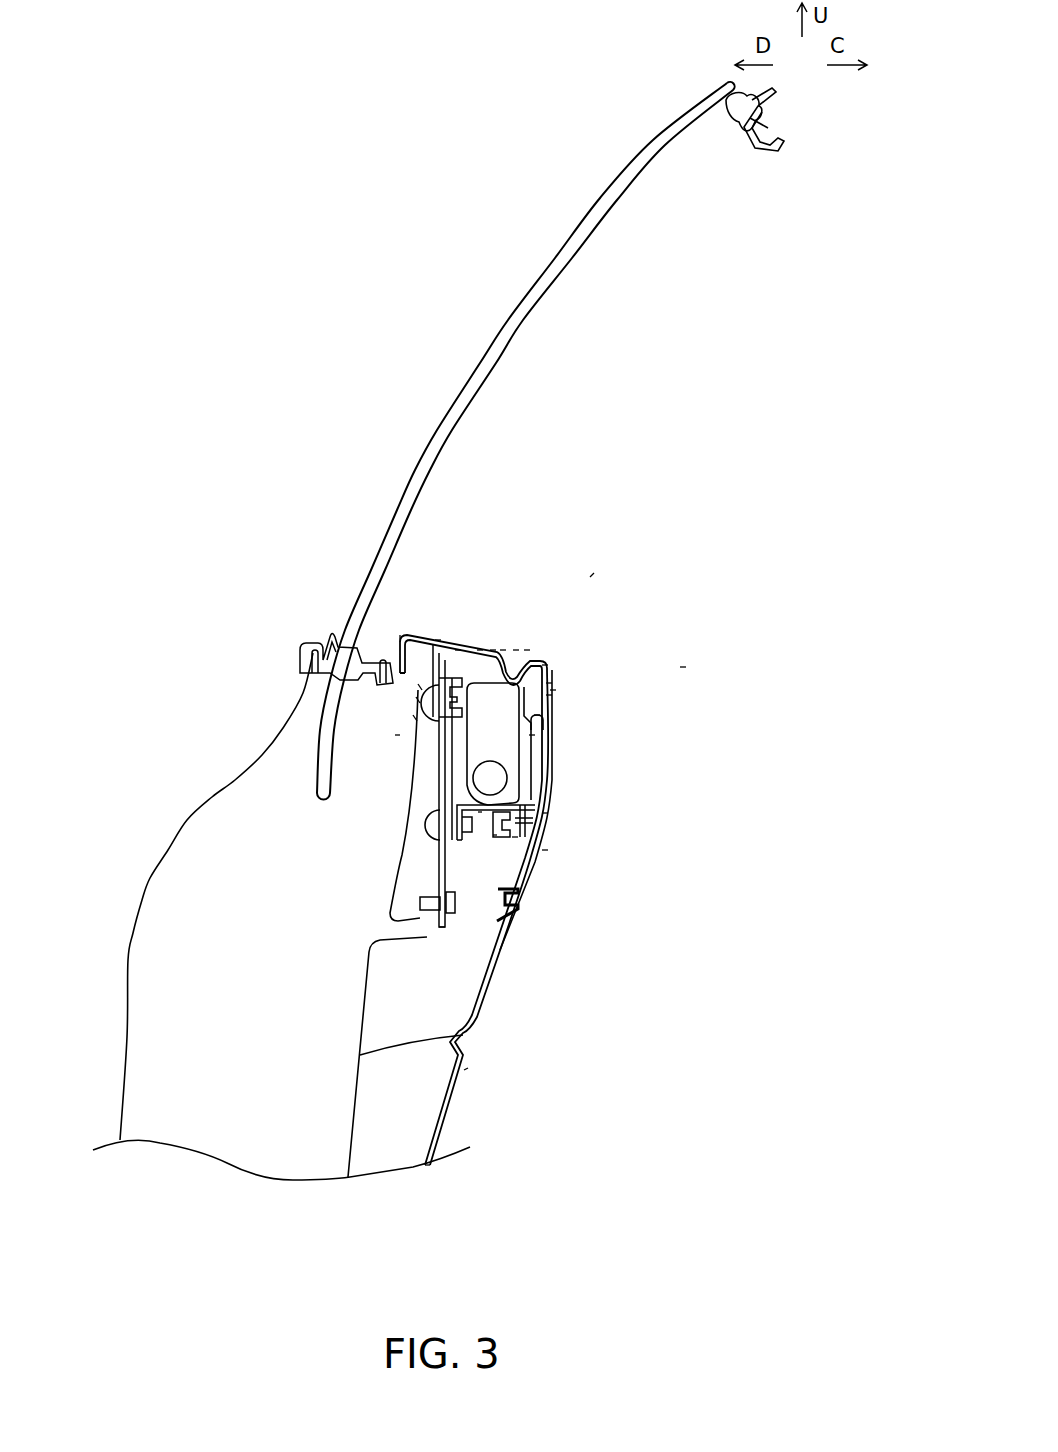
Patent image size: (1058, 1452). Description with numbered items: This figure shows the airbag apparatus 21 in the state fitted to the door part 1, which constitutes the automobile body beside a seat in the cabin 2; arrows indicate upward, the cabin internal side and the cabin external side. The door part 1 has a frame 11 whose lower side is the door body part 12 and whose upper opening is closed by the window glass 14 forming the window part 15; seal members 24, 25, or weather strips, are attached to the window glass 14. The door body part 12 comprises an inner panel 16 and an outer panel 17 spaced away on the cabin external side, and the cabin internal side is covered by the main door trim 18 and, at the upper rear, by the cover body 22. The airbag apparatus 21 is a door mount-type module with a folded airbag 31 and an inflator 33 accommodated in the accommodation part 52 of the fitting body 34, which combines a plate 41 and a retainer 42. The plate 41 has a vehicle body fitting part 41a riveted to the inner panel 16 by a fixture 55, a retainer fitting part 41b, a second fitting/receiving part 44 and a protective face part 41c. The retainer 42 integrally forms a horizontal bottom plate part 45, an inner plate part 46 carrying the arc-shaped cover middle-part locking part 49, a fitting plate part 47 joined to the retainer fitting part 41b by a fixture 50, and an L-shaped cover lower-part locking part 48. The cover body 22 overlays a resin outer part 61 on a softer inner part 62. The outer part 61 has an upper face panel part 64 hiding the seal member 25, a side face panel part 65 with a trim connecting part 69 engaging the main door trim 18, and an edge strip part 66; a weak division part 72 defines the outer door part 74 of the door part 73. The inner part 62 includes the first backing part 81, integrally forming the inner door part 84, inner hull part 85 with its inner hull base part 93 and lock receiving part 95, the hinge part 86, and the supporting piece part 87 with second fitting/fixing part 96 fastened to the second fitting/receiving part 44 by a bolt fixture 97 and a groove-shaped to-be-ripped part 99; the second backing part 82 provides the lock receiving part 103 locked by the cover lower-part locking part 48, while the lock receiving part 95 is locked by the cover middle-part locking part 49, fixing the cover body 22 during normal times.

The door part 1 is at (127, 1037).
The cabin 2 is at (683, 667).
The frame 11 is at (783, 150).
The door body part 12 is at (455, 1113).
The window glass 14 is at (540, 293).
The window part 15 is at (592, 247).
The inner panel 16 is at (473, 1035).
The outer panel 17 is at (133, 933).
The main door trim 18 is at (463, 1077).
The airbag apparatus 21 is at (601, 573).
The cover body 22 is at (552, 670).
The seal member 24 is at (730, 106).
The seal member 25 is at (333, 630).
The airbag 31 is at (545, 792).
The inflator 33 is at (545, 813).
The fitting body 34 is at (452, 932).
The plate 41 is at (445, 790).
The vehicle body fitting part 41a is at (420, 908).
The retainer fitting part 41b is at (457, 835).
The protective face part 41c is at (537, 715).
The retainer 42 is at (522, 747).
The second fitting/receiving part 44 is at (439, 717).
The bottom plate part 45 is at (480, 812).
The inner plate part 46 is at (490, 778).
The fitting plate part 47 is at (495, 835).
The cover lower-part locking part 48 is at (515, 837).
The cover middle-part locking part 49 is at (543, 720).
The fixture 50 is at (425, 825).
The accommodation part 52 is at (452, 778).
The fixture 55 is at (457, 903).
The outer part 61 is at (545, 665).
The inner part 62 is at (458, 655).
The upper face panel part 64 is at (503, 655).
The side face panel part 65 is at (553, 800).
The edge strip part 66 is at (400, 637).
The trim connecting part 69 is at (512, 920).
The division part 72 is at (527, 650).
The door part 73 is at (493, 655).
The outer door part 74 is at (480, 655).
The first backing part 81 is at (549, 683).
The second backing part 82 is at (533, 827).
The inner door part 84 is at (438, 645).
The inner hull part 85 is at (553, 690).
The hinge part 86 is at (516, 655).
The supporting piece part 87 is at (395, 735).
The inner hull base part 93 is at (549, 695).
The lock receiving part 95 is at (532, 735).
The second fitting/fixing part 96 is at (415, 718).
The fixture 97 is at (418, 700).
The to-be-ripped part 99 is at (420, 687).
The lock receiving part 103 is at (545, 850).